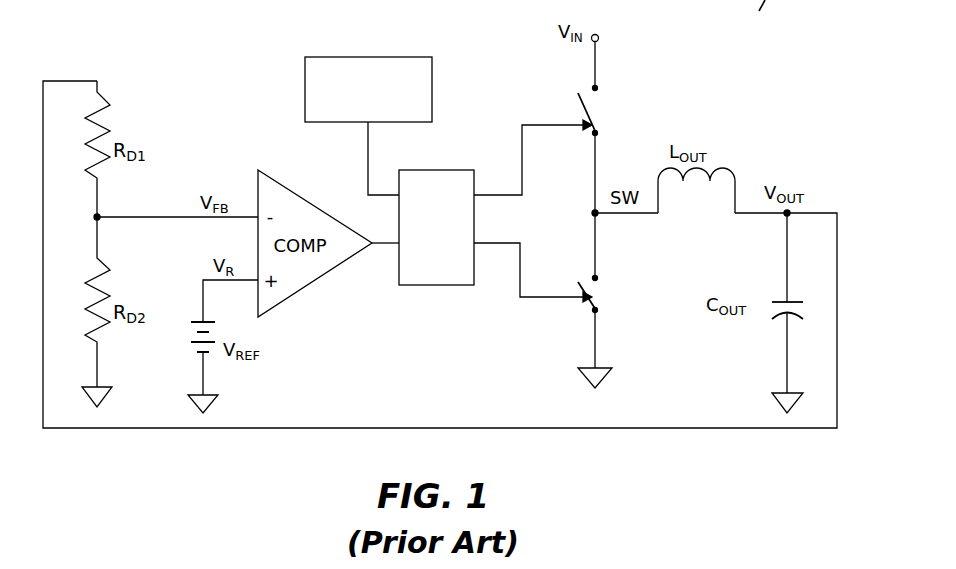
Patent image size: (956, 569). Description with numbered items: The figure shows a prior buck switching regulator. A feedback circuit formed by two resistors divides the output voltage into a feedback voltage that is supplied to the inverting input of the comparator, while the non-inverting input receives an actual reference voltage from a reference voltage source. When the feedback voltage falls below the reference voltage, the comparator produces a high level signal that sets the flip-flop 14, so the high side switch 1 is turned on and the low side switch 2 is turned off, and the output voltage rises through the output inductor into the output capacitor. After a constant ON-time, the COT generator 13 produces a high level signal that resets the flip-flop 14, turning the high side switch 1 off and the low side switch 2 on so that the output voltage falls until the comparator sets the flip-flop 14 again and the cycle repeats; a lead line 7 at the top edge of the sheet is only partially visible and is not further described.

The COT generator 13 is at (383, 57).
The RS flip-flop 14 is at (428, 170).
The high-side switch Q1 1 is at (601, 111).
The low-side switch Q2 2 is at (601, 295).
The partial lead line 7 is at (762, 5).